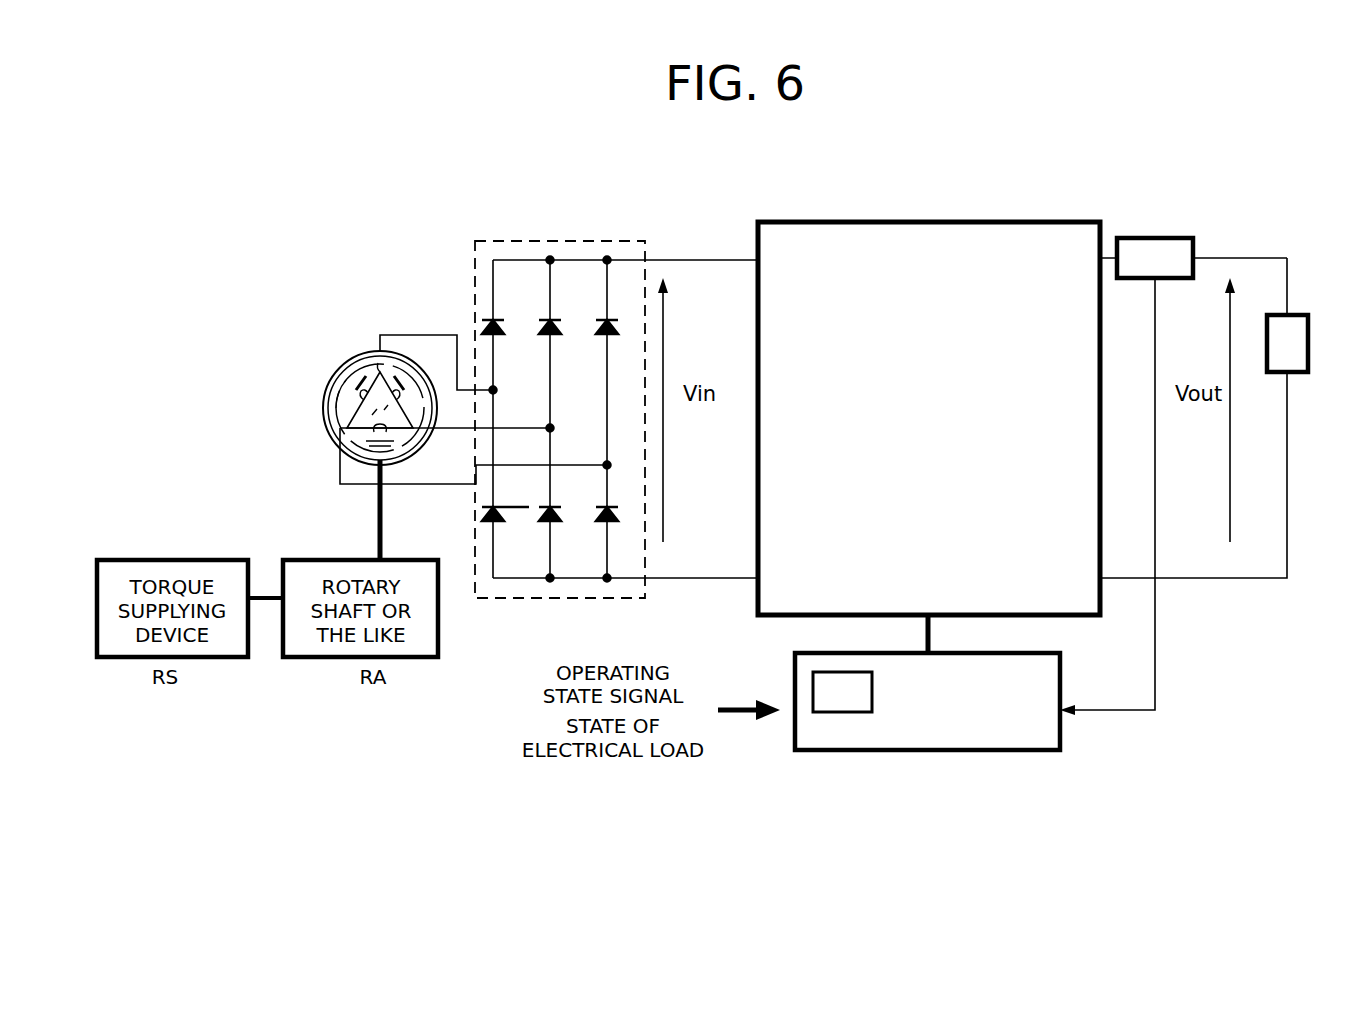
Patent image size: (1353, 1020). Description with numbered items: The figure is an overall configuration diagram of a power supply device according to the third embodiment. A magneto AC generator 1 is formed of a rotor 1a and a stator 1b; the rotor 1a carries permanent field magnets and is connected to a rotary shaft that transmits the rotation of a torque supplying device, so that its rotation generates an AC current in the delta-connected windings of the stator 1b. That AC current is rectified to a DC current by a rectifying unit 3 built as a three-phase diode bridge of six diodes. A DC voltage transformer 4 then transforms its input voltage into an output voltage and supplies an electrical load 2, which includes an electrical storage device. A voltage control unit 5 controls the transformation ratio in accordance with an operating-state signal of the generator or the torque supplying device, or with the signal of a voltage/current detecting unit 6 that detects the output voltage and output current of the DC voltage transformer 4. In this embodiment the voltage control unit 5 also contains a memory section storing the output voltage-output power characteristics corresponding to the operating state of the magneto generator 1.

The magneto AC generator 1 is at (258, 313).
The rotor 1a is at (336, 366).
The stator 1b is at (328, 389).
The electrical load 2 is at (1308, 335).
The rectifying unit 3 is at (574, 242).
The DC voltage transformer 4 is at (854, 222).
The voltage control unit 5 is at (1062, 690).
The voltage/current detecting unit 6 is at (1157, 238).